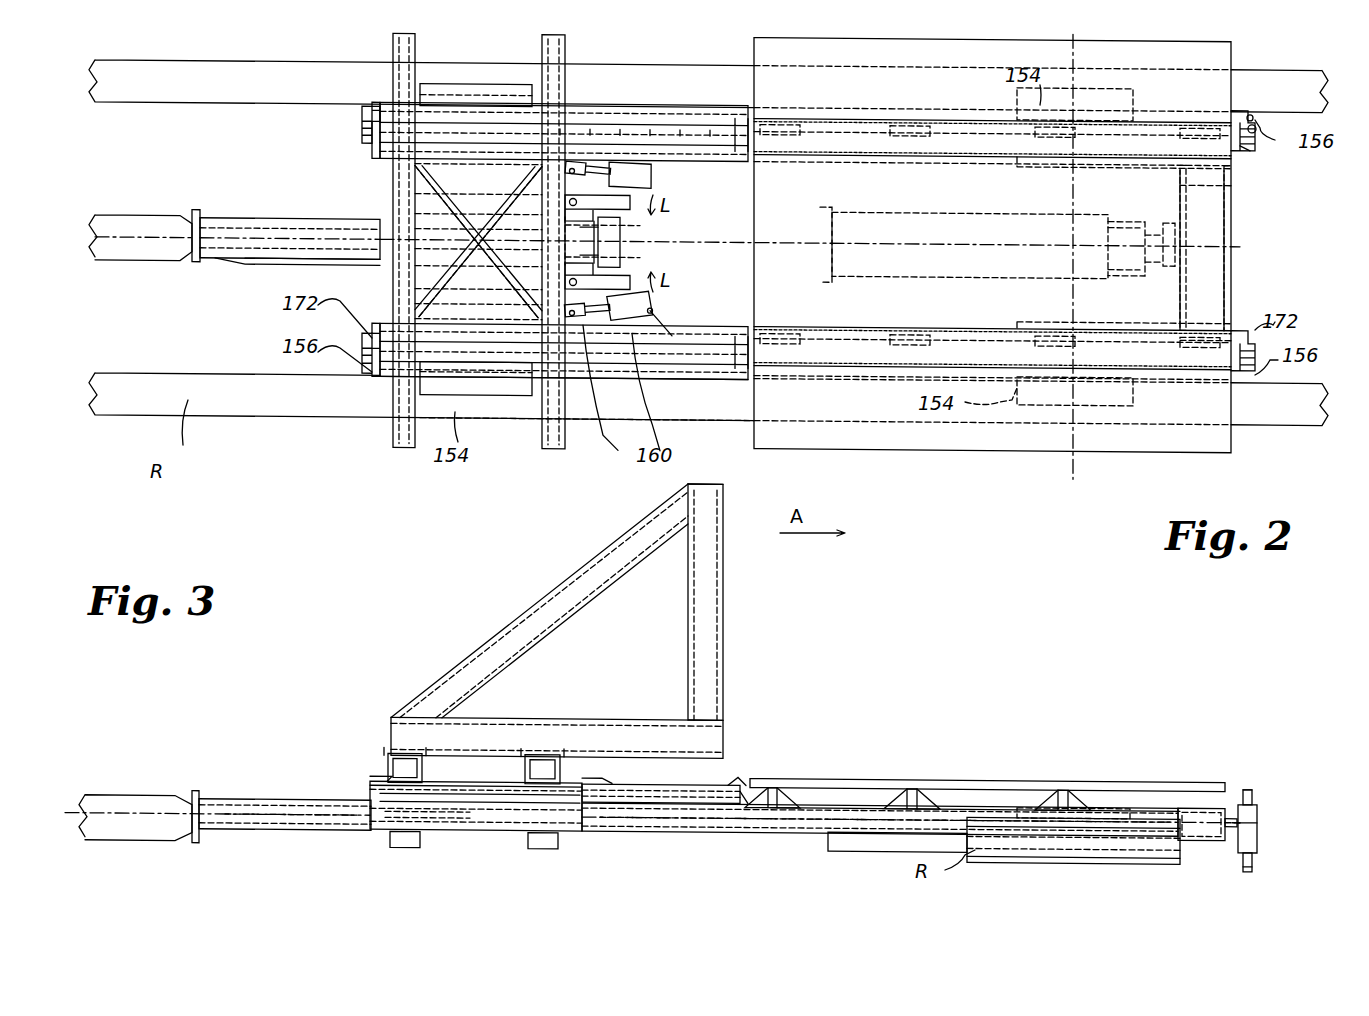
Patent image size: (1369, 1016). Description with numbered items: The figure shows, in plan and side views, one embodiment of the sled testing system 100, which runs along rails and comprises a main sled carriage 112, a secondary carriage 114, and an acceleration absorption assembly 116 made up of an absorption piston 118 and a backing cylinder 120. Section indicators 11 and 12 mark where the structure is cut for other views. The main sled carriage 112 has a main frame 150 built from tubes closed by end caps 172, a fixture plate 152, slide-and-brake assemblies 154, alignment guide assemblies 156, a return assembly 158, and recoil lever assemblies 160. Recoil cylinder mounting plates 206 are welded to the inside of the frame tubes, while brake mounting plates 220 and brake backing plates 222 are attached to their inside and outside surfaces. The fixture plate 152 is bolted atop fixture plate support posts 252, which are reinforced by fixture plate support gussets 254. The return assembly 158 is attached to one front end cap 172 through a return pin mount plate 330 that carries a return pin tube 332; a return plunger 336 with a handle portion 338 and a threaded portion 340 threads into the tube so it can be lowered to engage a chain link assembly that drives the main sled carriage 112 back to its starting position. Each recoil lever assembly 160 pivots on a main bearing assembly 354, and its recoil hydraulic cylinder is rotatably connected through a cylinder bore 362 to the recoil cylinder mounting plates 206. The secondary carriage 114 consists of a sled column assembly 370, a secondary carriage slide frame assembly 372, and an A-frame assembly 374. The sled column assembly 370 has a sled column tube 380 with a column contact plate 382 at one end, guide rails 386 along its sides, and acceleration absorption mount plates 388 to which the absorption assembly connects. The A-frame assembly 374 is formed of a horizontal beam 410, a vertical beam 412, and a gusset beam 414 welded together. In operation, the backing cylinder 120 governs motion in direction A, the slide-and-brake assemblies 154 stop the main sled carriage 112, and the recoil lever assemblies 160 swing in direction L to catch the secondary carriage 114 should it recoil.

In FIG. 2, the sled testing system 100 is at (660, 42).
In FIG. 2, the section line 11 is at (452, 90).
In FIG. 2, the section line 12 is at (478, 173).
In FIG. 2, the main sled carriage 112 is at (855, 130).
In FIG. 3, the main sled carriage 112 is at (652, 836).
In FIG. 2, the secondary carriage 114 is at (393, 423).
In FIG. 3, the secondary carriage 114 is at (391, 724).
In FIG. 2, the acceleration absorption assembly 116 is at (828, 280).
In FIG. 2, the absorption piston 118 is at (722, 240).
In FIG. 2, the backing cylinder 120 is at (920, 286).
In FIG. 3, the backing cylinder 120 is at (835, 846).
In FIG. 2, the main frame 150 is at (805, 120).
In FIG. 3, the main frame 150 is at (705, 836).
In FIG. 2, the fixture plate 152 is at (1222, 72).
In FIG. 3, the fixture plate 152 is at (1088, 777).
In FIG. 2, the slide-and-brake assemblies 154 is at (423, 58).
In FIG. 2, the alignment guide assemblies 156 is at (362, 112).
In FIG. 2, the return assembly 158 is at (1256, 122).
In FIG. 3, the return assembly 158 is at (1258, 812).
In FIG. 2, the recoil lever assemblies 160 is at (668, 165).
In FIG. 2, the end caps 172 is at (372, 150).
In FIG. 2, the recoil cylinder mounting plates 206 is at (650, 322).
In FIG. 2, the brake mounting plates 220 is at (1155, 120).
In FIG. 2, the brake backing plates 222 is at (1045, 168).
In FIG. 3, the fixture plate support posts 252 is at (776, 788).
In FIG. 3, the fixture plate support gussets 254 is at (782, 802).
In FIG. 2, the return pin mount plate 330 is at (1243, 140).
In FIG. 3, the return pin tube 332 is at (1258, 834).
In FIG. 3, the return plunger 336 is at (1268, 862).
In FIG. 3, the handle portion 338 is at (1256, 795).
In FIG. 3, the threaded portion 340 is at (1258, 818).
In FIG. 2, the main bearing assembly 354 is at (605, 395).
In FIG. 2, the cylinder bore 362 is at (648, 314).
In FIG. 2, the sled column assembly 370 is at (262, 216).
In FIG. 3, the sled column assembly 370 is at (243, 800).
In FIG. 2, the secondary carriage slide frame assembly 372 is at (542, 424).
In FIG. 3, the secondary carriage slide frame assembly 372 is at (503, 774).
In FIG. 3, the A-frame assembly 374 is at (706, 602).
In FIG. 2, the sled column tube 380 is at (188, 265).
In FIG. 2, the column contact plate 382 is at (196, 212).
In FIG. 2, the guide rails 386 is at (245, 268).
In FIG. 2, the acceleration absorption mount plates 388 is at (640, 235).
In FIG. 3, the horizontal beam 410 is at (592, 727).
In FIG. 3, the vertical beam 412 is at (710, 636).
In FIG. 3, the gusset beam 414 is at (530, 614).